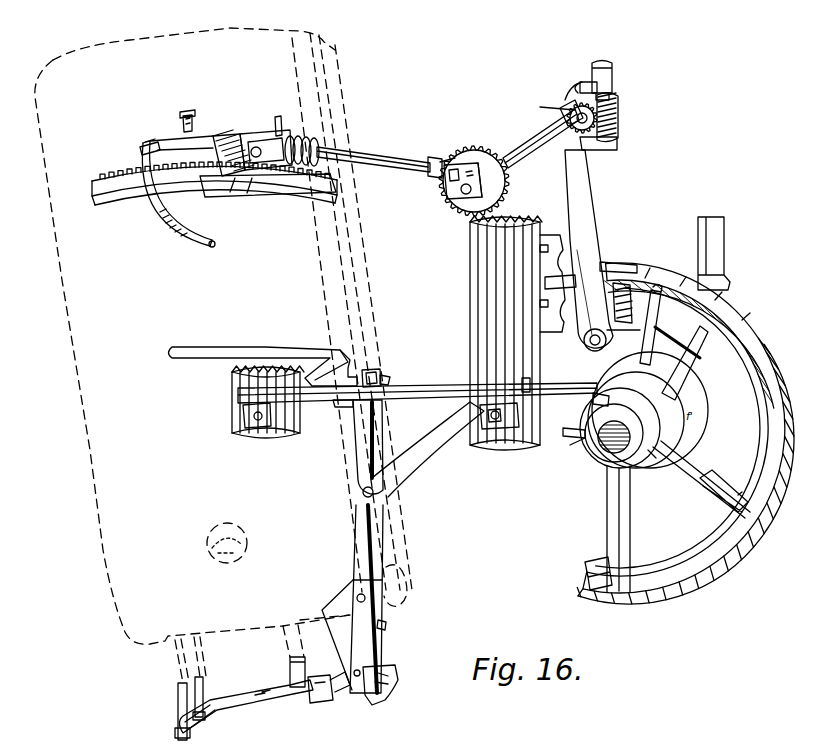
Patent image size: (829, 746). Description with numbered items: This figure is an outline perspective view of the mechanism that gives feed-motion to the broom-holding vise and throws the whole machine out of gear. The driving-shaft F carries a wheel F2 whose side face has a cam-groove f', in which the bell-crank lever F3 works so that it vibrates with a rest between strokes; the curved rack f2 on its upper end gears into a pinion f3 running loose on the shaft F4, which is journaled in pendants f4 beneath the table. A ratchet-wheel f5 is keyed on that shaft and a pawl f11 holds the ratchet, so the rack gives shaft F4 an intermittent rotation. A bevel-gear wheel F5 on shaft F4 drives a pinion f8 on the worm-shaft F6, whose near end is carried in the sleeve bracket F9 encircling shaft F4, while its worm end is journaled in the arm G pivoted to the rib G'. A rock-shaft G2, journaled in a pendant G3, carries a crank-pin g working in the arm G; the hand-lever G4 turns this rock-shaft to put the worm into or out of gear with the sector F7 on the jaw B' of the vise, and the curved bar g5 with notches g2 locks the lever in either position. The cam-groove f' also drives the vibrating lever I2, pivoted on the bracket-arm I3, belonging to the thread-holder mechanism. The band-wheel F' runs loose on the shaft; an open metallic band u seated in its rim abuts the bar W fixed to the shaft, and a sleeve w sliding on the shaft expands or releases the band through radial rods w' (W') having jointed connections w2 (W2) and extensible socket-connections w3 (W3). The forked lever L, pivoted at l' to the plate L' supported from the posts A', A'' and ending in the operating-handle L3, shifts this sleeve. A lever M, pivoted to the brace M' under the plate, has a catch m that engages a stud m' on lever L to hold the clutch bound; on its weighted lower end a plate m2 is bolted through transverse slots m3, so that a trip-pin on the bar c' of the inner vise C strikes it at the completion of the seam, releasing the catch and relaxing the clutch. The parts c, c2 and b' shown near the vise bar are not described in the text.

The jaw of the vise B' is at (223, 355).
The rack or sector F7 is at (214, 183).
The curved bar g5 is at (183, 200).
The notches g2 is at (221, 246).
The hand-lever G4 is at (158, 149).
The pendant G3 is at (193, 116).
The rock-shaft G2 is at (233, 146).
The arm G is at (226, 141).
The crank-pin g is at (277, 119).
The rib G' is at (268, 191).
The worm-shaft F6 is at (335, 138).
The globe or sleeve bracket F9 is at (474, 181).
The pinion f8 is at (448, 160).
The shaft F4 is at (536, 158).
The pinion f3 is at (620, 112).
The pendants f4 is at (613, 76).
The cam-groove f' is at (586, 80).
The pawl f11 is at (573, 82).
The ratchet-wheel f5 is at (557, 100).
The geared sector or curved rack f2 is at (618, 140).
The driving-shaft F is at (602, 249).
The bell-crank lever F3 is at (604, 341).
The bevel-gear wheel F5 is at (567, 274).
The posts A' is at (517, 333).
The vibrating lever I2 is at (714, 253).
The bracket-arm I3 is at (618, 285).
The band-wheel F' is at (685, 433).
The bar W is at (627, 529).
The radial rods W' is at (701, 479).
The extensible socket-connections W3 is at (724, 490).
The jointed connections W2 is at (740, 495).
The jointed connections w2 is at (657, 463).
The open or cut metallic band u is at (580, 583).
The wheel F2 is at (705, 412).
The hub or sleeve w is at (649, 348).
The radial rods w' is at (566, 435).
The extensible socket-connections w3 is at (594, 423).
The forked lever L is at (408, 404).
The plate L' is at (428, 447).
The pivot l' is at (539, 377).
The ribbed bearing cylinder A'' is at (268, 409).
The operating-handle L3 is at (263, 359).
The keeper or catch m is at (380, 367).
The stud or pin m' is at (398, 373).
The brace M' is at (386, 448).
The lever M is at (370, 599).
The transverse slots m3 is at (366, 598).
The plate m2 is at (387, 626).
The plate c is at (291, 650).
The U-shaped bar c' is at (196, 708).
The inner adjustable vise C is at (275, 690).
The cylinder c2 is at (325, 658).
The clamp b' is at (329, 697).